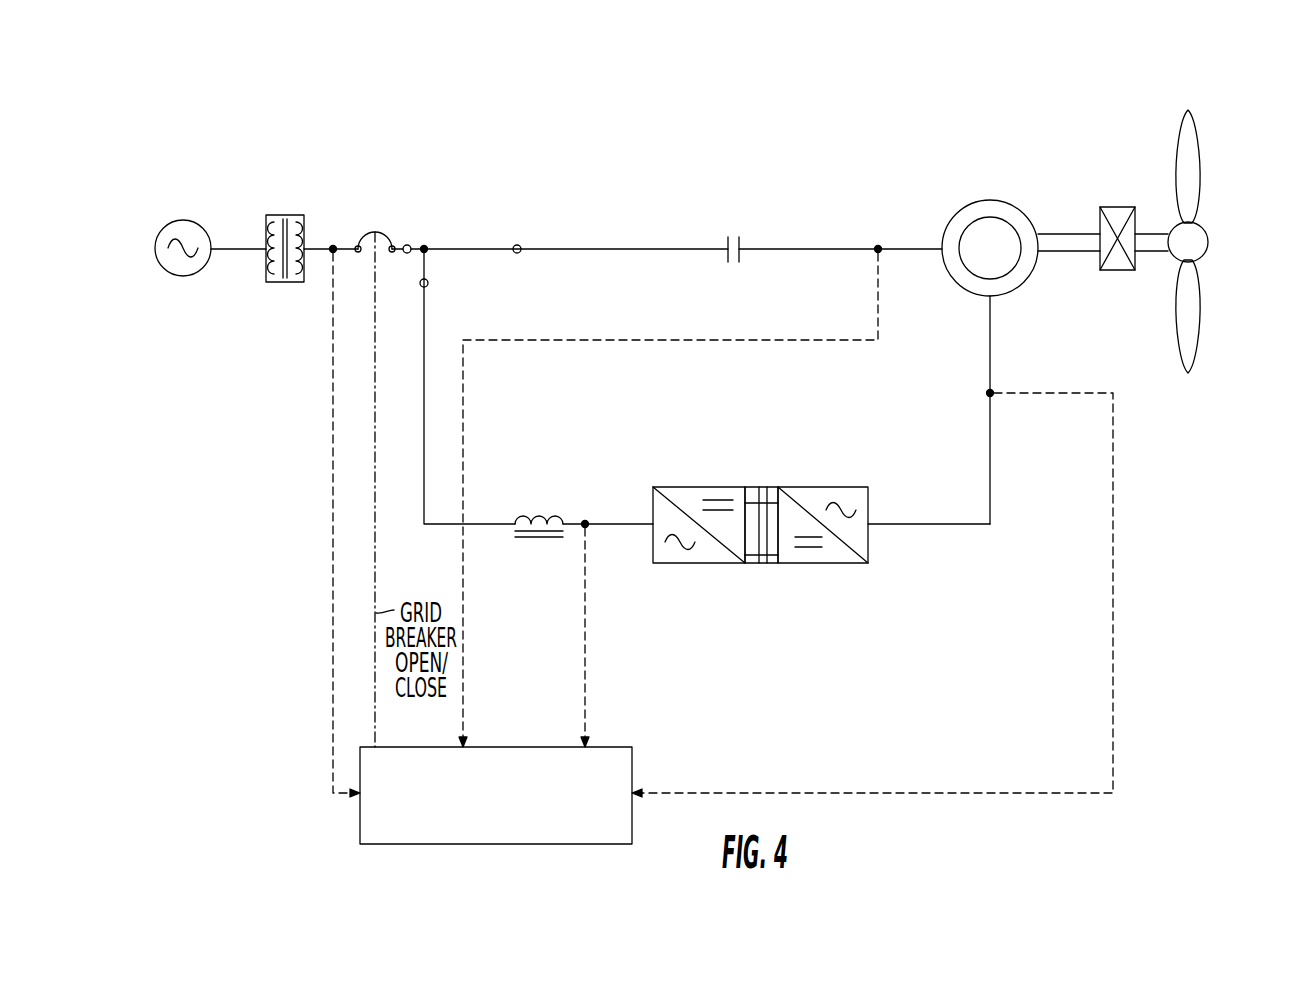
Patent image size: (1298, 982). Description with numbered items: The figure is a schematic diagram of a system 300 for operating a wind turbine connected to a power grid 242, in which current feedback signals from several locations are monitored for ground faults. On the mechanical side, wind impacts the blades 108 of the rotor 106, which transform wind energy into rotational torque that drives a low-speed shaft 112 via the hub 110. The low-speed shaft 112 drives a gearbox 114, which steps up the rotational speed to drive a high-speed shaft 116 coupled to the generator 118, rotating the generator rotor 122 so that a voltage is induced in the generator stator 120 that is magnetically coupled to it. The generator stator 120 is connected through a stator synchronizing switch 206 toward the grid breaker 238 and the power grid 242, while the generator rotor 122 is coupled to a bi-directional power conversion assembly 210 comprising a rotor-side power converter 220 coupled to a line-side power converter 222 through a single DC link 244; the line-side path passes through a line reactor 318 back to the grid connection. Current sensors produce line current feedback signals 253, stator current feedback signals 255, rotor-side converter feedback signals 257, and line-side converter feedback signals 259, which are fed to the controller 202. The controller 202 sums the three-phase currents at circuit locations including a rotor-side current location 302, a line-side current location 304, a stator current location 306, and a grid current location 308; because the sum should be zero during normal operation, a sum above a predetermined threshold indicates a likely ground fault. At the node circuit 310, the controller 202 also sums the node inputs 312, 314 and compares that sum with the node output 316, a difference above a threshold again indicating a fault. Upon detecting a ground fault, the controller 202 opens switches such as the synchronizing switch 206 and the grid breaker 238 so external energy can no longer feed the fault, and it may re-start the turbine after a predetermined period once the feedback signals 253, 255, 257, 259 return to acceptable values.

The system for operating a wind turbine 300 is at (1232, 208).
The rotor 106 is at (1232, 241).
The blades 108 is at (1200, 165).
The hub 110 is at (1208, 238).
The low-speed shaft 112 is at (1155, 233).
The gearbox 114 is at (1114, 206).
The high-speed shaft 116 is at (1070, 233).
The generator 118 is at (987, 181).
The generator stator 120 is at (1012, 205).
The generator rotor 122 is at (977, 235).
The stator synchronizing switch 206 is at (740, 236).
The power conversion assembly 210 is at (791, 511).
The rotor-side power converter 220 is at (868, 555).
The line-side power converter 222 is at (663, 563).
The DC link 244 is at (762, 487).
The power grid 242 is at (183, 220).
The grid breaker 238 is at (375, 232).
The controller 202 is at (514, 822).
The line current feedback signals 253 is at (332, 445).
The stator current feedback signals 255 is at (545, 340).
The rotor-side converter feedback signals 257 is at (1113, 570).
The line-side converter feedback signals 259 is at (585, 673).
The rotor-side current location 302 is at (990, 393).
The line-side current location 304 is at (583, 520).
The stator current location 306 is at (878, 245).
The grid current location 308 is at (333, 245).
The node circuit 310 is at (424, 245).
The node input 312 is at (428, 283).
The node input 314 is at (517, 245).
The node output 316 is at (408, 253).
The line reactor 318 is at (555, 540).